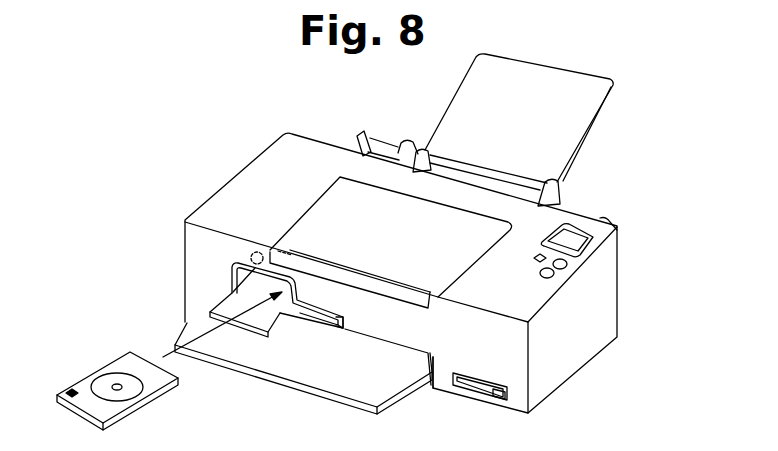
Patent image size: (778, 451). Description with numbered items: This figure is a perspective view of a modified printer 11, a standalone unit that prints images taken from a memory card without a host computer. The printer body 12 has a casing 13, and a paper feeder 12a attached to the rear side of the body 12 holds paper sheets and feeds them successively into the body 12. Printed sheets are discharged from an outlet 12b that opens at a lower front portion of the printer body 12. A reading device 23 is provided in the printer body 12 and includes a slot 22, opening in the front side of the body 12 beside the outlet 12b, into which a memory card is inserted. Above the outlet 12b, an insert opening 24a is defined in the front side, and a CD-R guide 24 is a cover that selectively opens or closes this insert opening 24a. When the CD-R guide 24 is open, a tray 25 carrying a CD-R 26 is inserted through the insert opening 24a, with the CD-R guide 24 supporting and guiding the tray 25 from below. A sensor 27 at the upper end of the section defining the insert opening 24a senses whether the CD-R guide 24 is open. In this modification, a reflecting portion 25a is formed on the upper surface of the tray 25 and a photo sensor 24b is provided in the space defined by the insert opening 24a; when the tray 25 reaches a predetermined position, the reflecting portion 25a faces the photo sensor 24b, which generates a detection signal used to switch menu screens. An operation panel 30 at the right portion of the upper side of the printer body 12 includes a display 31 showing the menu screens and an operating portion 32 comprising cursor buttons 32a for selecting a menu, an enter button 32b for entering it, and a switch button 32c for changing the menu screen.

The printer 11 is at (652, 81).
The printer body 12 is at (258, 150).
The paper feeder 12a is at (356, 140).
The outlet 12b is at (411, 350).
The casing 13 is at (588, 213).
The slot 22 is at (490, 384).
The reading device 23 is at (483, 395).
The CD-R guide 24 is at (222, 306).
The insert opening 24a is at (252, 250).
The photo sensor 24b is at (286, 254).
The tray 25 is at (163, 381).
The reflecting portion 25a is at (70, 392).
The CD-R 26 is at (114, 374).
The sensor 27 is at (338, 320).
The operation panel 30 is at (607, 226).
The display 31 is at (598, 245).
The operating portion 32 is at (694, 268).
The cursor buttons 32a is at (542, 259).
The enter button 32b is at (568, 269).
The switch button 32c is at (556, 277).